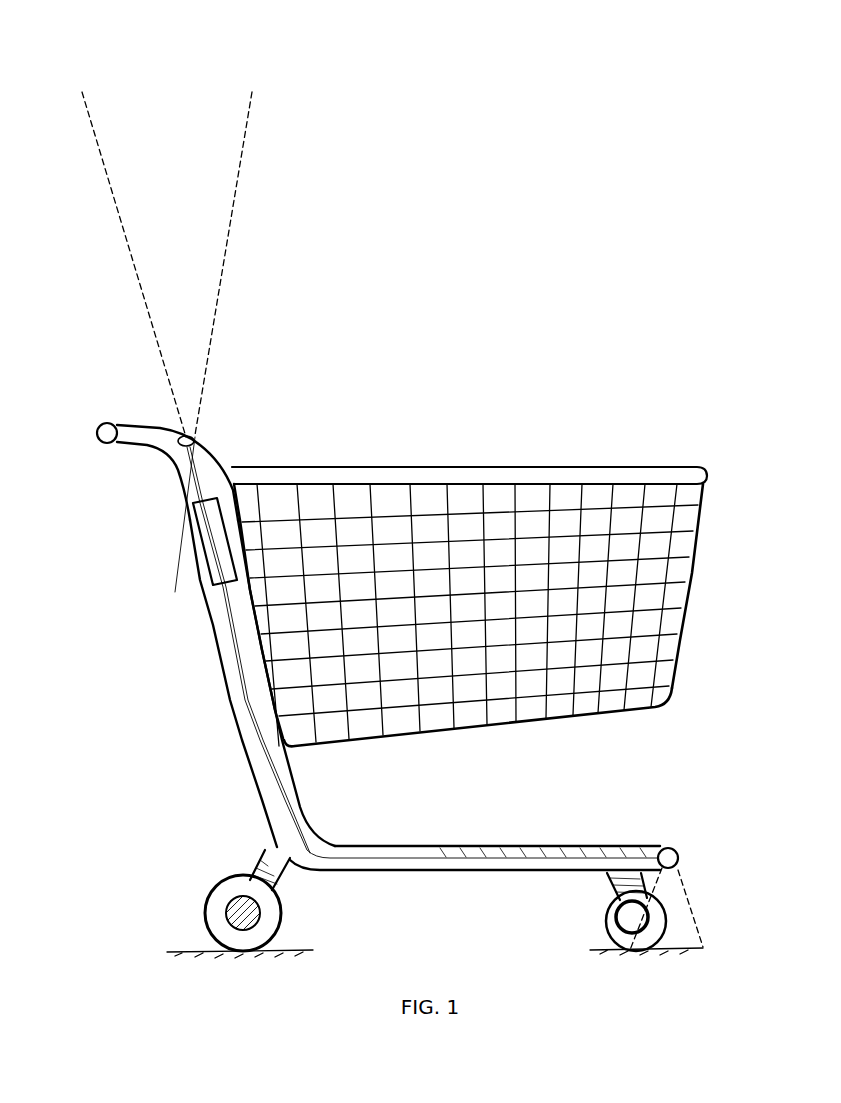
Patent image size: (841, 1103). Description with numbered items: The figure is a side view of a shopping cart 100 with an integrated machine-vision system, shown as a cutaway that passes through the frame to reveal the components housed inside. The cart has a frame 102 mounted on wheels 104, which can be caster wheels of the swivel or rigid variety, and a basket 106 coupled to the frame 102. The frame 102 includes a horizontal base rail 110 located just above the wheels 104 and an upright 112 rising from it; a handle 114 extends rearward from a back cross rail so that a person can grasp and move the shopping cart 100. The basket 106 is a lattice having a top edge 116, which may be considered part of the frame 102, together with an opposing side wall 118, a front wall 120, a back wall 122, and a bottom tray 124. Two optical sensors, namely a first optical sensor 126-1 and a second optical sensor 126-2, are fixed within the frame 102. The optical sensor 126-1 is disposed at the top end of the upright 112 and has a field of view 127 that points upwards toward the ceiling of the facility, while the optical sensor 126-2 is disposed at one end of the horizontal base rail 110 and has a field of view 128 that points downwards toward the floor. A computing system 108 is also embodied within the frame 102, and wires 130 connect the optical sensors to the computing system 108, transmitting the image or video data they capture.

The shopping cart 100 is at (638, 268).
The frame 102 is at (208, 466).
The wheels 104 is at (262, 913).
The basket 106 is at (498, 609).
The computing system 108 is at (212, 543).
The horizontal base rail 110 is at (577, 847).
The upright 112 is at (230, 662).
The handle 114 is at (101, 427).
The top edge 116 is at (699, 476).
The side wall 118 is at (556, 683).
The front wall 120 is at (678, 642).
The back wall 122 is at (262, 640).
The bottom tray 124 is at (436, 728).
The optical sensor 126-1 is at (192, 437).
The optical sensor 126-2 is at (679, 858).
The field of view 127 is at (212, 233).
The field of view 128 is at (683, 907).
The wires 130 is at (233, 633).